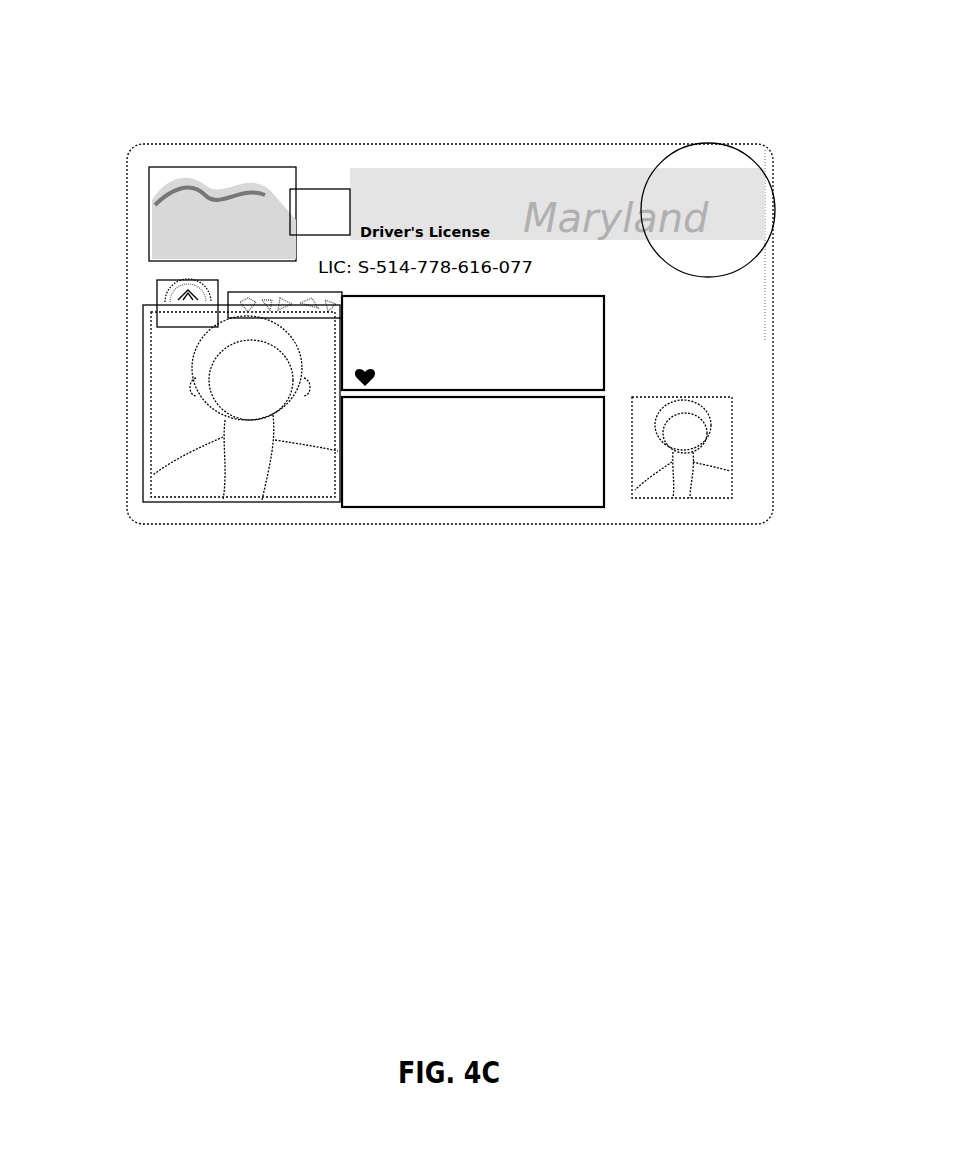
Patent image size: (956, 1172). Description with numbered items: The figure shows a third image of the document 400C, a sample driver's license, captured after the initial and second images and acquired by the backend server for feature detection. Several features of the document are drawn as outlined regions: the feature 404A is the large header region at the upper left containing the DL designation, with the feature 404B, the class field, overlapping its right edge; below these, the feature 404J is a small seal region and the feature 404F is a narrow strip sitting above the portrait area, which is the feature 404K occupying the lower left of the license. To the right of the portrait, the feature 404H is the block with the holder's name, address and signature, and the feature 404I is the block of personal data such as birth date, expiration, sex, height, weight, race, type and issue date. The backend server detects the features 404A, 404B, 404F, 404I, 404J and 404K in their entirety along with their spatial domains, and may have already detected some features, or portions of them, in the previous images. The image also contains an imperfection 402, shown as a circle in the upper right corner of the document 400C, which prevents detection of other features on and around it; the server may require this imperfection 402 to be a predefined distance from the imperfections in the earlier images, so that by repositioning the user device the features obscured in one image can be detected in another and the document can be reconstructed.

The third image of the document 400C is at (101, 70).
The imperfection 402 is at (691, 143).
The feature 404A is at (178, 167).
The feature 404B is at (331, 189).
The feature 404F is at (243, 293).
The feature 404H is at (604, 323).
The feature 404I is at (503, 507).
The feature 404J is at (157, 291).
The feature 404K is at (266, 502).